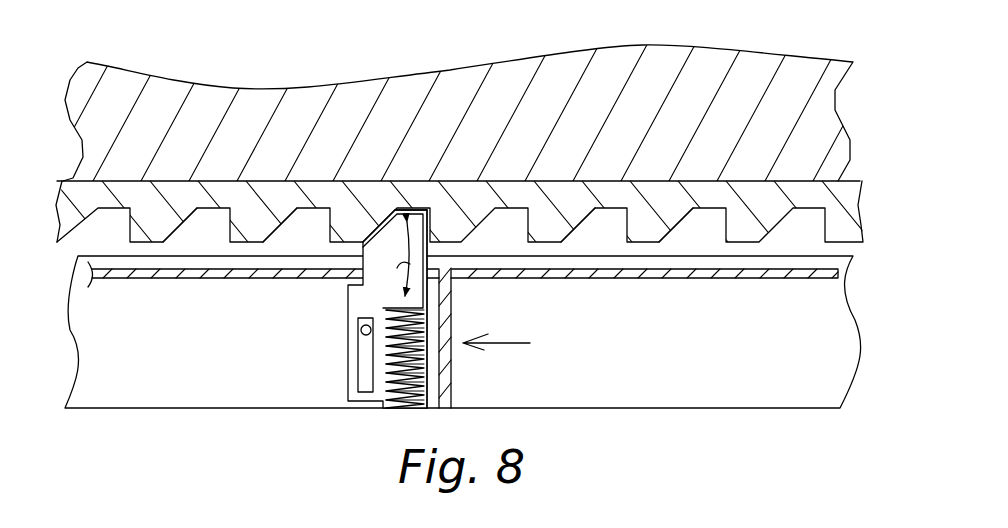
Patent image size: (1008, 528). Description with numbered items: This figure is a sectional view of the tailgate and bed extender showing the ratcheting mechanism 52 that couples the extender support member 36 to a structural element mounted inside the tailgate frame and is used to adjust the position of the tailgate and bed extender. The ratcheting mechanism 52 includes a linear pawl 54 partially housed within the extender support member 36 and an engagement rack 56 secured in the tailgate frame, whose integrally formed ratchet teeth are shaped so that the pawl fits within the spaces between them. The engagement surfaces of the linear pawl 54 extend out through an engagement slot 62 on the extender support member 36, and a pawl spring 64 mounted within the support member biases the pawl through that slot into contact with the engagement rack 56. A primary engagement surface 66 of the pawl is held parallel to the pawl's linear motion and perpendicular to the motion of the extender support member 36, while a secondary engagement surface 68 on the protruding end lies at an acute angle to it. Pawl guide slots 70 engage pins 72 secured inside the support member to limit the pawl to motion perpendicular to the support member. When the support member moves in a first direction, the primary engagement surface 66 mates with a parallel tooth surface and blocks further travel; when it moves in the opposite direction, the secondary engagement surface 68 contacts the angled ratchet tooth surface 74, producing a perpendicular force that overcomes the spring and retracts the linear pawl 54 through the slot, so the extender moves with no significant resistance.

The extender support member 36 is at (806, 272).
The ratcheting mechanism 52 is at (807, 340).
The linear pawl 54 is at (373, 295).
The engagement rack 56 is at (562, 203).
The engagement slot 62 is at (430, 270).
The pawl spring 64 is at (423, 367).
The primary engagement surface 66 is at (428, 223).
The secondary engagement surface 68 is at (365, 238).
The pawl guide slots 70 is at (362, 378).
The pins 72 is at (150, 242).
The angled ratchet tooth surface 74 is at (582, 229).